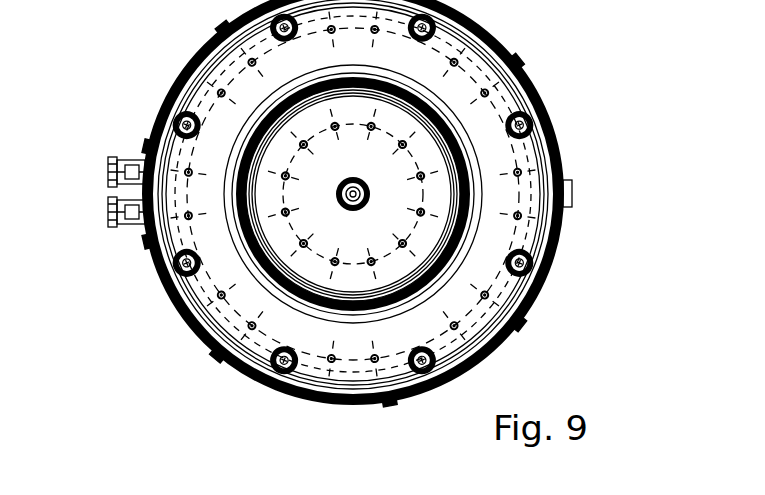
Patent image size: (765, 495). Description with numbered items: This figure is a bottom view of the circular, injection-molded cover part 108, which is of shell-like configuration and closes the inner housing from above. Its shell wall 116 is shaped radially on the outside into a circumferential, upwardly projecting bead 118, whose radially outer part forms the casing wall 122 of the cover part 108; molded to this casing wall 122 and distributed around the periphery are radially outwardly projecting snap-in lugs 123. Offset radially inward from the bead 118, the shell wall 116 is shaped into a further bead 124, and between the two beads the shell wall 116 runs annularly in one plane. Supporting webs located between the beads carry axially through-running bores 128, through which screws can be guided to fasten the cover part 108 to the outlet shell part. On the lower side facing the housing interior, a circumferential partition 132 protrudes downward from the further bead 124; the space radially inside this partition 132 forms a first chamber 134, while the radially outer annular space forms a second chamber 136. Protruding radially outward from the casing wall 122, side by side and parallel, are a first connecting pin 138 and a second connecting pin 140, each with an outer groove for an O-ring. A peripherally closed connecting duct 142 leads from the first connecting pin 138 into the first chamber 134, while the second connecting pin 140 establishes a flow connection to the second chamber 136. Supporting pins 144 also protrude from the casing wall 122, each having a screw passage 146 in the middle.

The cover part 108 is at (176, 324).
The shell wall 116 is at (528, 92).
The bead 118 is at (548, 155).
The casing wall 122 is at (560, 236).
The snap-in lugs 123 is at (572, 192).
The further bead 124 is at (386, 318).
The bores 128 is at (465, 374).
The partition 132 is at (467, 177).
The first chamber 134 is at (415, 225).
The second chamber 136 is at (545, 287).
The first connecting pin 138 is at (108, 172).
The second connecting pin 140 is at (108, 220).
The connecting duct 142 is at (230, 158).
The supporting pins 144 is at (407, 138).
The screw passage 146 is at (350, 206).